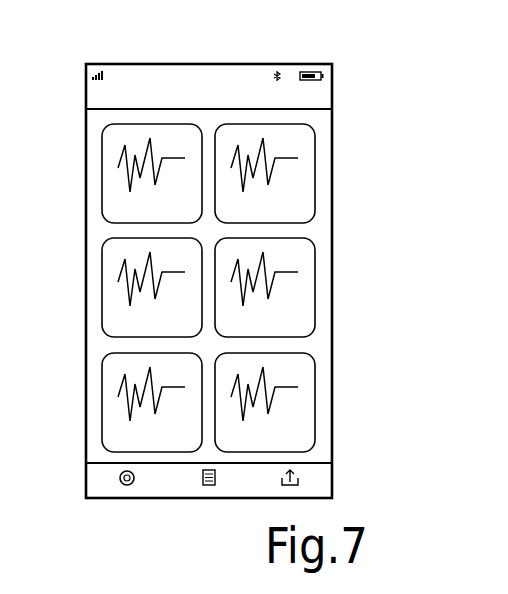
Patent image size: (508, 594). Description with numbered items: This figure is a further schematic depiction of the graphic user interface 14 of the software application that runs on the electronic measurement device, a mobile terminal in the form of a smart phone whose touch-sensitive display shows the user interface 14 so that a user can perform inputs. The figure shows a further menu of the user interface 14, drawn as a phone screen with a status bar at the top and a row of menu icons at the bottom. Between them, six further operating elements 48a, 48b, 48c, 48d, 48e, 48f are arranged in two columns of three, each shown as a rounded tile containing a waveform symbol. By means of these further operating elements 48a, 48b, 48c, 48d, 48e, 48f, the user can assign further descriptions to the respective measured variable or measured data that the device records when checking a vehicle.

The graphic user interface 14 is at (330, 82).
The further operating element 48a is at (104, 202).
The further operating element 48b is at (313, 159).
The further operating element 48c is at (104, 310).
The further operating element 48d is at (313, 274).
The further operating element 48e is at (104, 425).
The further operating element 48f is at (311, 398).